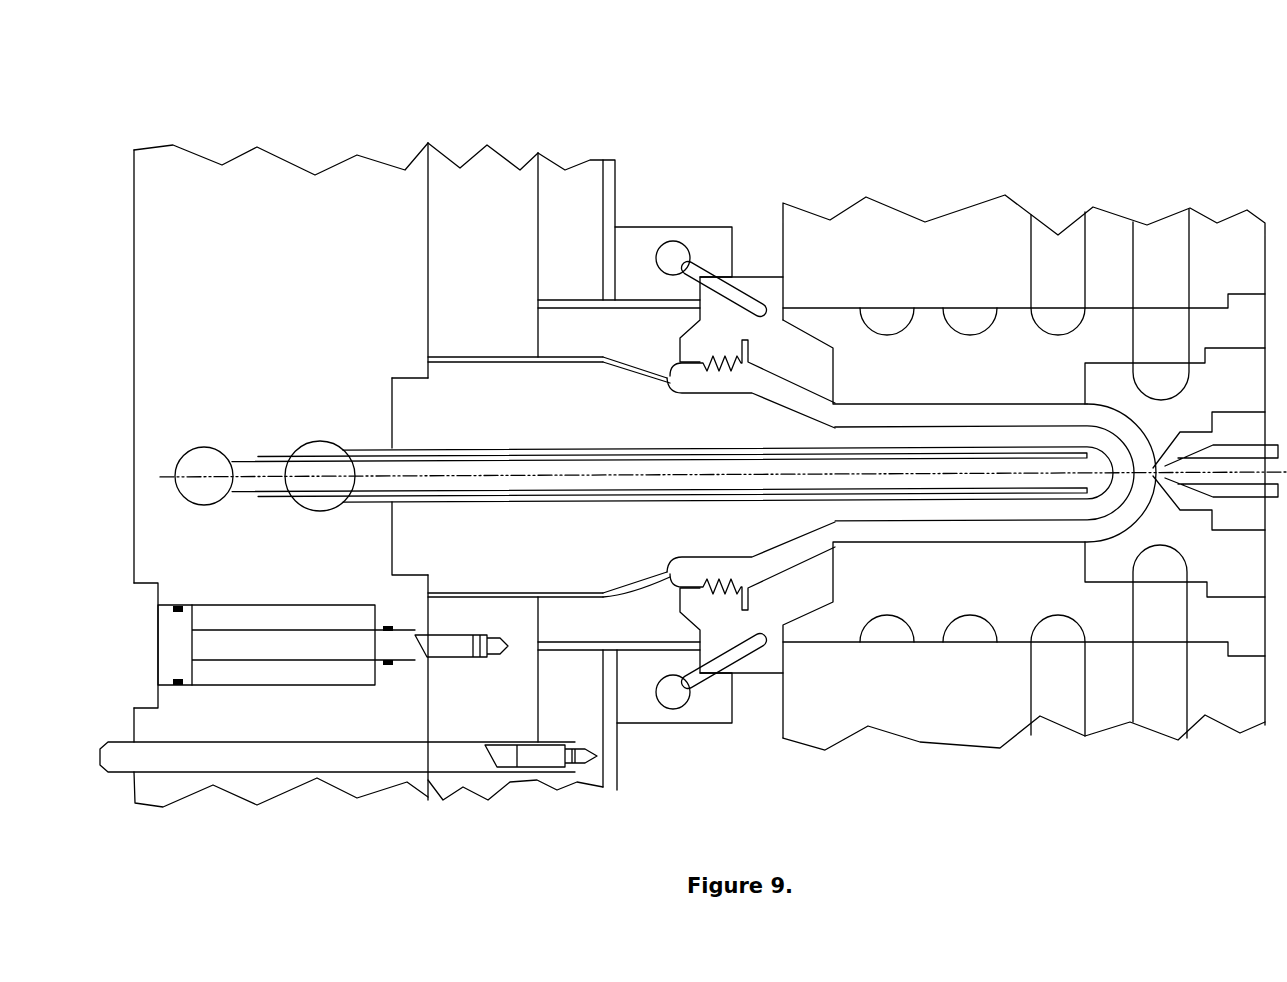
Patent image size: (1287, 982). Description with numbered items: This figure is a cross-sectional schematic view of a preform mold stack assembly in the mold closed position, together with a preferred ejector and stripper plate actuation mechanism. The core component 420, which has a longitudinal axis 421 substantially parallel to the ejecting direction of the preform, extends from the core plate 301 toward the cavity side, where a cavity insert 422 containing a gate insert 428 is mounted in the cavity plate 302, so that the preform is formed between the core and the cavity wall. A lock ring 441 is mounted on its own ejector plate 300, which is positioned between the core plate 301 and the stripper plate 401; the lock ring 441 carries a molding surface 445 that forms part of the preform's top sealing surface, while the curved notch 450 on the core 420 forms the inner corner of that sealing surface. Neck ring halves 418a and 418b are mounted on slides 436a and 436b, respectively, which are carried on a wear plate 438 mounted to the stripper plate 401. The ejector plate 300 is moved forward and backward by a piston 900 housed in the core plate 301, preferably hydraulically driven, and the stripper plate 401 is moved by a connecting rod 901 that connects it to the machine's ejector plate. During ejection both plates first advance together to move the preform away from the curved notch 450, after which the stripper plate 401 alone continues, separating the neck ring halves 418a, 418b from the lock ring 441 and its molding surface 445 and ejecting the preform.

The core plate 301 is at (225, 212).
The ejector plate 300 is at (452, 185).
The lock ring 441 is at (453, 190).
The stripper plate 401 is at (593, 330).
The wear plate 438 is at (605, 187).
The molding surface 445 is at (670, 378).
The curved notch 450 is at (560, 597).
The slide 436b is at (647, 237).
The slide 436a is at (643, 713).
The neck ring half 418b is at (770, 290).
The neck ring half 418a is at (768, 660).
The cavity plate 302 is at (912, 242).
The cavity insert 422 is at (1020, 342).
The gate insert 428 is at (1242, 373).
The core component 420 is at (428, 410).
The longitudinal axis 421 is at (167, 474).
The piston 900 is at (302, 647).
The connecting rod 901 is at (370, 758).